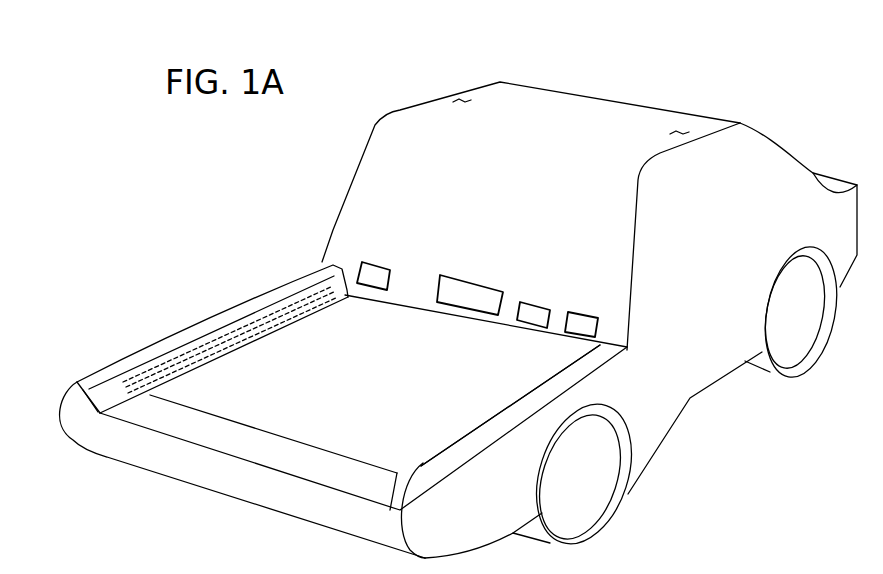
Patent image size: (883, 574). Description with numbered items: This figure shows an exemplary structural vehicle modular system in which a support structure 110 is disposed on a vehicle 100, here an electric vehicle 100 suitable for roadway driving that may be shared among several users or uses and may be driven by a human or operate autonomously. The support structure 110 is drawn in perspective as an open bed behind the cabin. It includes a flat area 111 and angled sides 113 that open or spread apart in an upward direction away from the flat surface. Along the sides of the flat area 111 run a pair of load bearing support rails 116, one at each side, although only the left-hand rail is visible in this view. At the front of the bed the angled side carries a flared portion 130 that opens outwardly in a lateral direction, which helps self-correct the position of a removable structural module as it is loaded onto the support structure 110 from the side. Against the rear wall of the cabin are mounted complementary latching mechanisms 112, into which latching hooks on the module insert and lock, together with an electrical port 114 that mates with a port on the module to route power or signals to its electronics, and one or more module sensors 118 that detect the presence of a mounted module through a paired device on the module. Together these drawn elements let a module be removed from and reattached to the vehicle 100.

The vehicle 100 is at (557, 95).
The support structure 110 is at (150, 353).
The flat area 111 is at (263, 417).
The latching mechanisms 112 is at (372, 275).
The angled sides 113 is at (217, 330).
The electrical port 114 is at (458, 282).
The load bearing support rails 116 is at (280, 312).
The module sensors 118 is at (533, 302).
The flared portion 130 is at (107, 393).